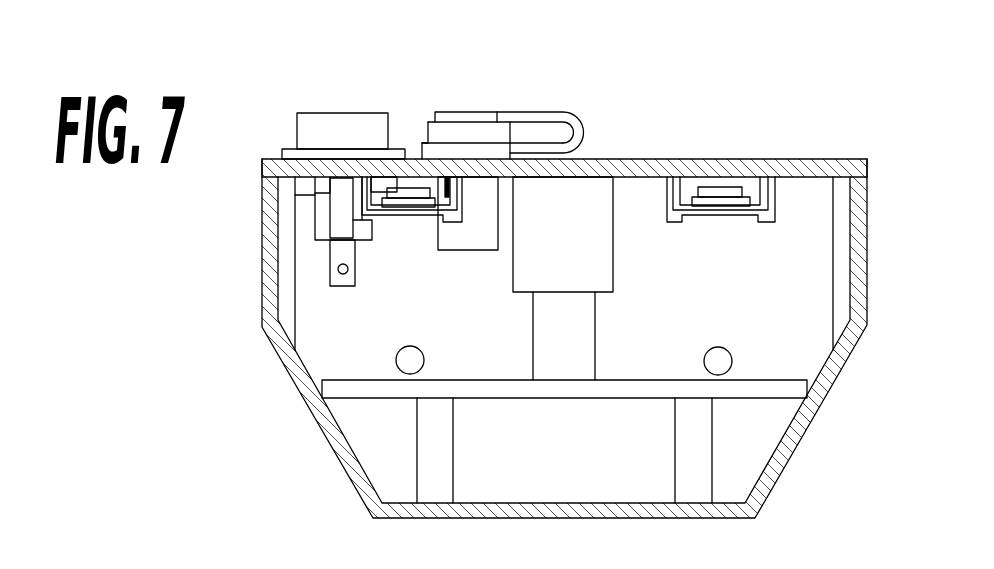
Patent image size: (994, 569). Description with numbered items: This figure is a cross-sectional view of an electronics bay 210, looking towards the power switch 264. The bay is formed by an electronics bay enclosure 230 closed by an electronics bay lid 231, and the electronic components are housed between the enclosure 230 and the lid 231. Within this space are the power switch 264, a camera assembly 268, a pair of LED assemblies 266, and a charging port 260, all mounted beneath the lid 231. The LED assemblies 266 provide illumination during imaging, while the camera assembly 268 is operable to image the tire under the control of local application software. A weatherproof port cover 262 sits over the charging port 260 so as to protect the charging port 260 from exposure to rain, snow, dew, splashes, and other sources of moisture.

The electronics bay 210 is at (497, 284).
The electronics bay enclosure 230 is at (827, 397).
The electronics bay lid 231 is at (641, 159).
The charging port 260 is at (468, 253).
The weatherproof port cover 262 is at (555, 110).
The power switch 264 is at (317, 243).
The LED assemblies 266 is at (400, 222).
The camera assembly 268 is at (585, 198).